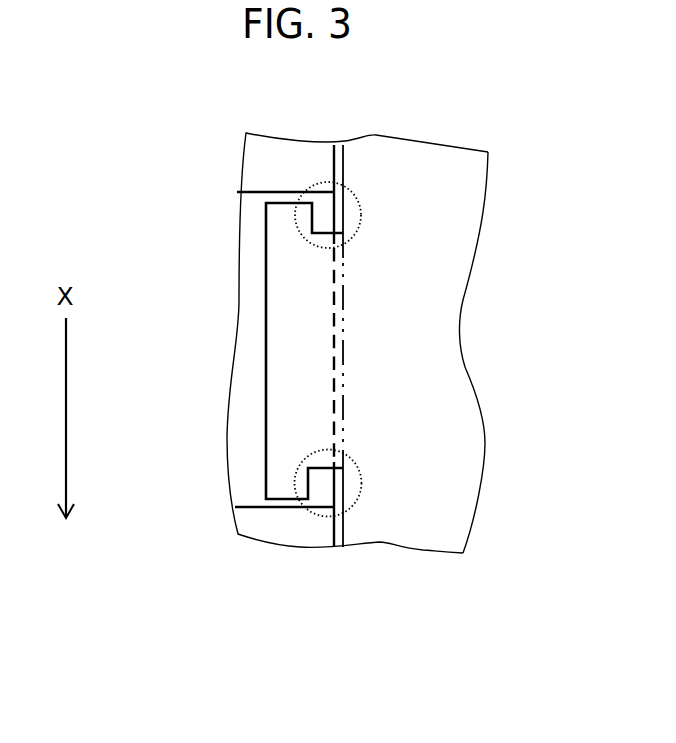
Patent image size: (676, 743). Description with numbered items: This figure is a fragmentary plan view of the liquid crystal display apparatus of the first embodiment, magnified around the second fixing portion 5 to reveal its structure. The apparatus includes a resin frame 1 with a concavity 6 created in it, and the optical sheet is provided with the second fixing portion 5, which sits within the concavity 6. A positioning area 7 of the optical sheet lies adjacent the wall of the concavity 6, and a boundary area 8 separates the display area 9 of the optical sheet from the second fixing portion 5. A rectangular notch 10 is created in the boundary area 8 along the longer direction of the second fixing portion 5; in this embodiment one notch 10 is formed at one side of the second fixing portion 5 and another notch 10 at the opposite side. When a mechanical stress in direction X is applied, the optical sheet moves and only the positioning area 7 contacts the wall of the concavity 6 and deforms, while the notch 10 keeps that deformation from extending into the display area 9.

The resin frame 1 is at (287, 162).
The second fixing portion 5 is at (283, 387).
The concavity 6 is at (252, 242).
The positioning area 7 is at (280, 503).
The boundary area 8 is at (343, 363).
The display area 9 is at (445, 213).
The notch 10 is at (360, 224).